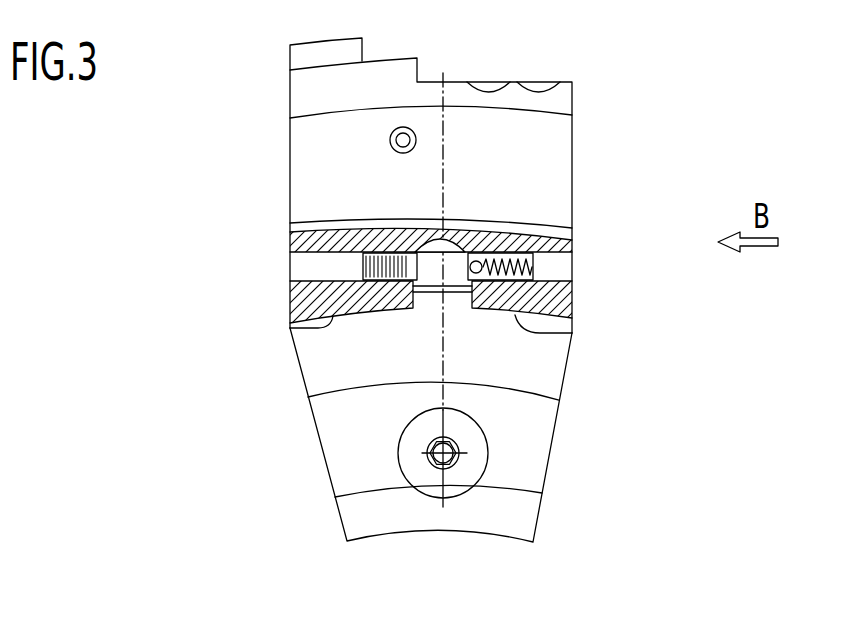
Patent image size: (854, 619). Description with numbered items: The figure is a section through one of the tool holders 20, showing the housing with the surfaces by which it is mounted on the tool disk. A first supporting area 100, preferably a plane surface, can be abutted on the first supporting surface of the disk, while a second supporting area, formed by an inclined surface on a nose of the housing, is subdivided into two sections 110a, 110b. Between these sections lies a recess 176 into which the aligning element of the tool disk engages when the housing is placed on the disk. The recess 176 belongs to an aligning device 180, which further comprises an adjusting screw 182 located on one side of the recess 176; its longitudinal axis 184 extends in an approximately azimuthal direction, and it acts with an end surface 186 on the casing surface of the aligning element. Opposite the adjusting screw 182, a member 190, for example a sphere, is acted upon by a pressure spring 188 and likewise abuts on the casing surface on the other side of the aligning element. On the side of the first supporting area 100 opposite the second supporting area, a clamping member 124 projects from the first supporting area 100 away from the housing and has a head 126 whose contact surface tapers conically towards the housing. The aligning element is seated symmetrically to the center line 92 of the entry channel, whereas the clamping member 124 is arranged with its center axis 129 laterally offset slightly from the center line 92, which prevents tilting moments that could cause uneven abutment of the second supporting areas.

The tool holder 20 is at (276, 189).
The center line 92 is at (443, 358).
The first supporting area 100 is at (353, 356).
The section of second supporting area 110a is at (560, 332).
The section of second supporting area 110b is at (290, 328).
The clamping member 124 is at (428, 484).
The head 126 is at (400, 443).
The center axis 129 is at (488, 450).
The recess 176 is at (467, 248).
The aligning device 180 is at (387, 195).
The adjusting screw 182 is at (380, 250).
The longitudinal axis 184 is at (362, 264).
The end surface 186 is at (433, 238).
The pressure spring 188 is at (516, 248).
The member 190 is at (570, 290).